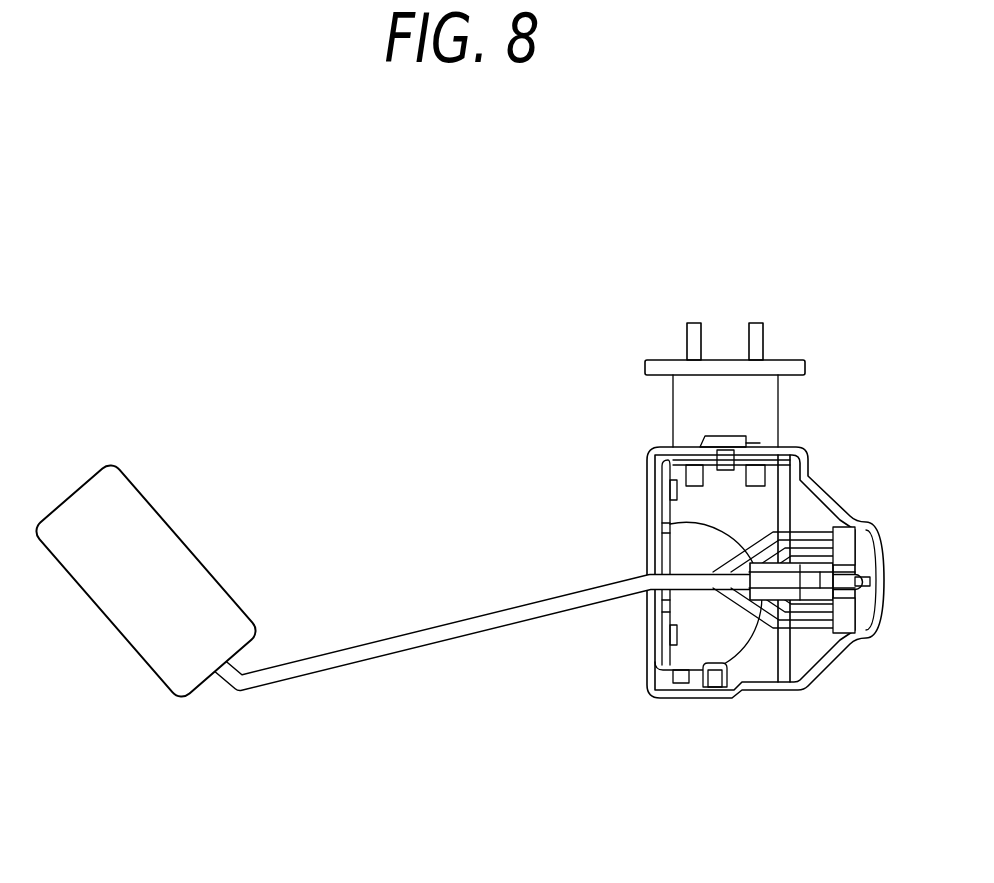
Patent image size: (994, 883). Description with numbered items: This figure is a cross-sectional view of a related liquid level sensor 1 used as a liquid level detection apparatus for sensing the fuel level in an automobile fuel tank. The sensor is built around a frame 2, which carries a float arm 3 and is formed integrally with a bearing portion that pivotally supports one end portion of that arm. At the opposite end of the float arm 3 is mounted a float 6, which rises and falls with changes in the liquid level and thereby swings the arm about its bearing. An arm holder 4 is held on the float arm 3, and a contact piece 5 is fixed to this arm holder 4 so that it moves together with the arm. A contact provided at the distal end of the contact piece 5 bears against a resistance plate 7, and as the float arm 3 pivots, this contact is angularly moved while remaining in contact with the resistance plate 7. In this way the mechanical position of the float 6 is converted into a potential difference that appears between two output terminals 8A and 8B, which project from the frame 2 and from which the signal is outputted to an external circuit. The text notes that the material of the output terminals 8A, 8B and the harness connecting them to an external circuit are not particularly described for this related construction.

The liquid level sensor 1 is at (668, 272).
The frame 2 is at (782, 690).
The float arm 3 is at (412, 643).
The arm holder 4 is at (712, 677).
The contact piece 5 is at (670, 524).
The float 6 is at (172, 542).
The resistance plate 7 is at (688, 627).
The output terminal 8A is at (700, 340).
The output terminal 8B is at (757, 343).